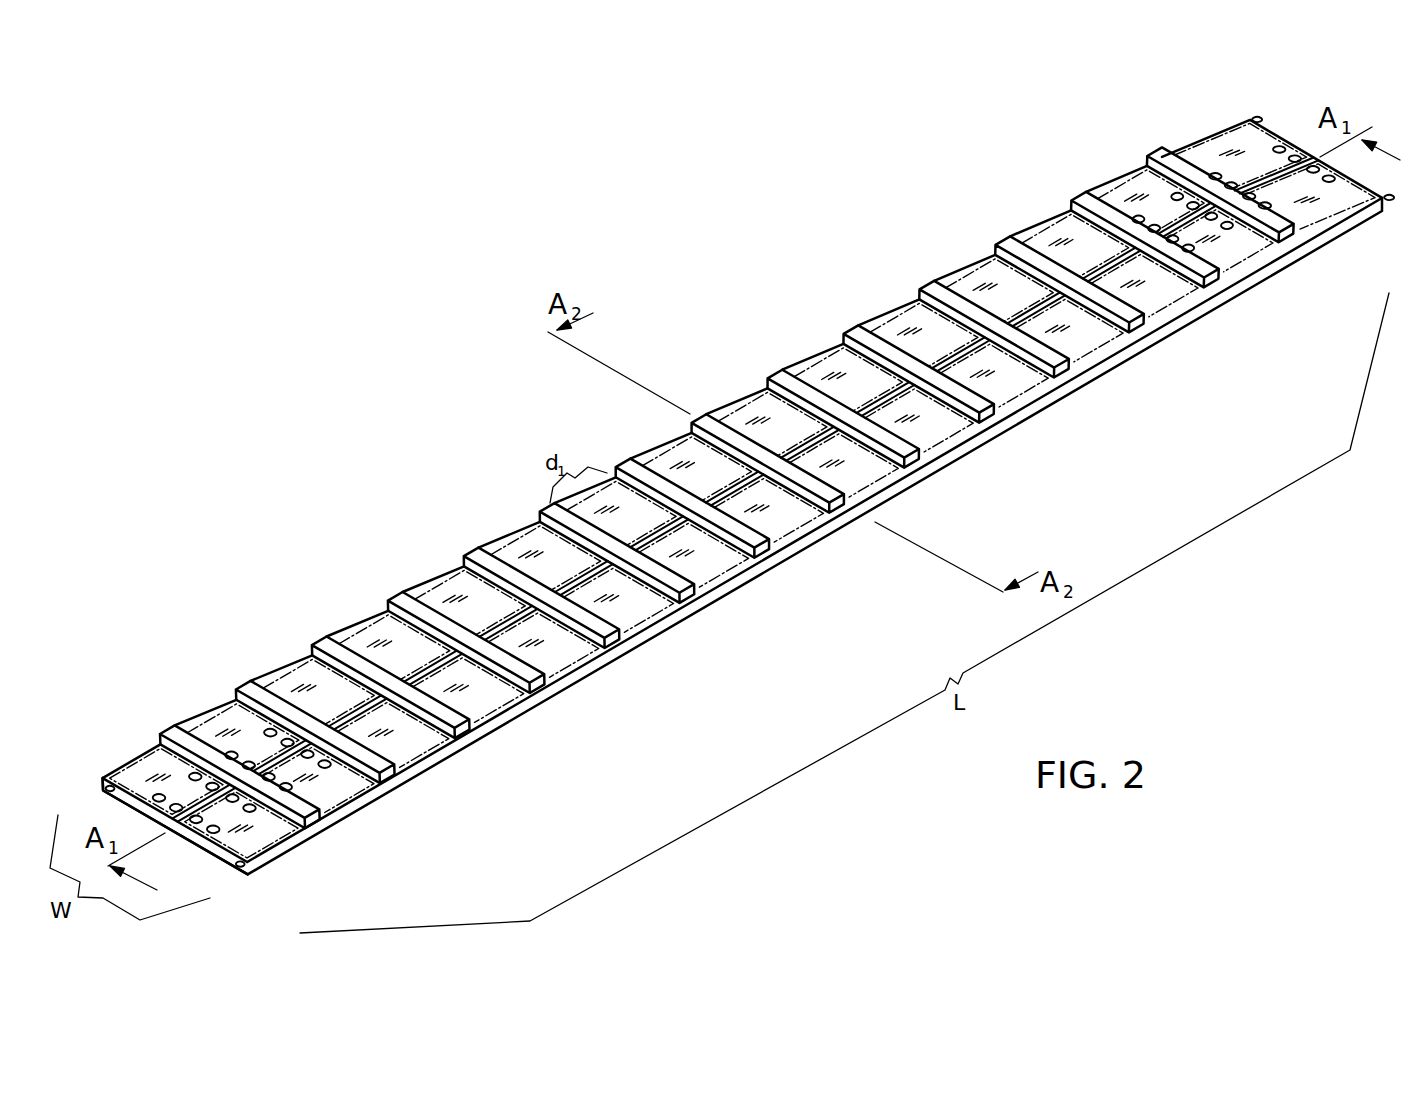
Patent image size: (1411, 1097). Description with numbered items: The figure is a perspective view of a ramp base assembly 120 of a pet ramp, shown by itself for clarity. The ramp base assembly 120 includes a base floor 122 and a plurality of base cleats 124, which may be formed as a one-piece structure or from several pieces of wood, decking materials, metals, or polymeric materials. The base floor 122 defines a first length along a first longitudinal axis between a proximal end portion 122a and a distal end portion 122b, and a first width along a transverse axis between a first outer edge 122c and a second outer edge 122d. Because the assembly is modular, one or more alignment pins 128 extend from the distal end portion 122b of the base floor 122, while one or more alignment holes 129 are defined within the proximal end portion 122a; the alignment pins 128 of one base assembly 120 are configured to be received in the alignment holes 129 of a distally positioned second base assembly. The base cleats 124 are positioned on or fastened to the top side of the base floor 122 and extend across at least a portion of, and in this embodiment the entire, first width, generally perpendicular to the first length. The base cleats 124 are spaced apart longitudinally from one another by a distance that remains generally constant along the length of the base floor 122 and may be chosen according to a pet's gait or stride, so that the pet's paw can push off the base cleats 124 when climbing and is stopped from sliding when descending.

The ramp base assembly 120 is at (356, 372).
The base floor 122 is at (1003, 404).
The proximal end portion 122a is at (285, 852).
The distal end portion 122b is at (1352, 207).
The first outer edge 122c is at (967, 270).
The second outer edge 122d is at (1205, 320).
The base cleats 124 is at (910, 290).
The alignment pins 128 is at (1250, 114).
The alignment holes 129 is at (105, 790).